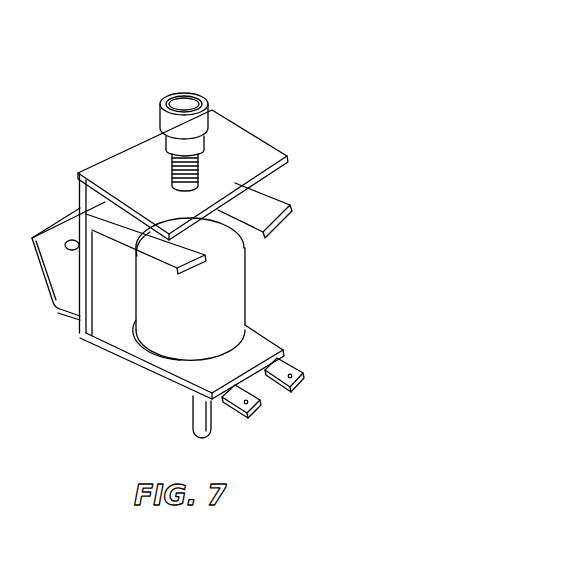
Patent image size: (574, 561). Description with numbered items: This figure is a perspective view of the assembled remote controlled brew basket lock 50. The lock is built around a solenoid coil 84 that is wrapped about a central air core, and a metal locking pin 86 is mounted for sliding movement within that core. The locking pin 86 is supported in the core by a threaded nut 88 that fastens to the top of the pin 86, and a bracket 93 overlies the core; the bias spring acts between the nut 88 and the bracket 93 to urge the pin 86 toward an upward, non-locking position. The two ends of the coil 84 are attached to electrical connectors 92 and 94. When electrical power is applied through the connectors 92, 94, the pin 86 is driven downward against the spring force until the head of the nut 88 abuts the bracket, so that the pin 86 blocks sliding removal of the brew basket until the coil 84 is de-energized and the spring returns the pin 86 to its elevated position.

The remote controlled brew basket lock 50 is at (284, 62).
The solenoid coil 84 is at (238, 298).
The locking pin 86 is at (167, 286).
The threaded nut 88 is at (212, 113).
The electrical connector 92 is at (257, 400).
The bracket 93 is at (137, 155).
The electrical connector 94 is at (298, 368).